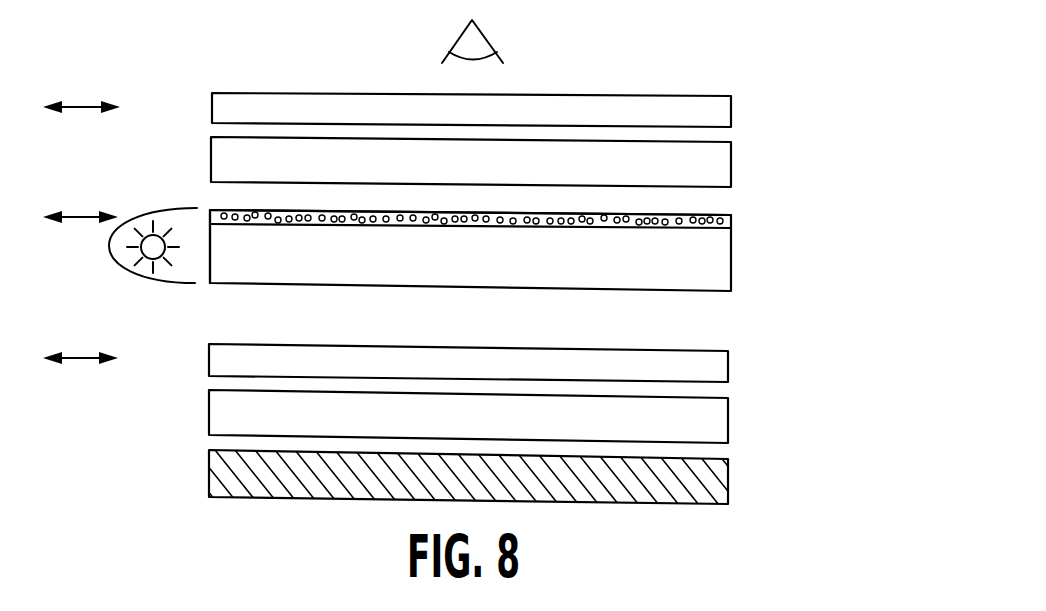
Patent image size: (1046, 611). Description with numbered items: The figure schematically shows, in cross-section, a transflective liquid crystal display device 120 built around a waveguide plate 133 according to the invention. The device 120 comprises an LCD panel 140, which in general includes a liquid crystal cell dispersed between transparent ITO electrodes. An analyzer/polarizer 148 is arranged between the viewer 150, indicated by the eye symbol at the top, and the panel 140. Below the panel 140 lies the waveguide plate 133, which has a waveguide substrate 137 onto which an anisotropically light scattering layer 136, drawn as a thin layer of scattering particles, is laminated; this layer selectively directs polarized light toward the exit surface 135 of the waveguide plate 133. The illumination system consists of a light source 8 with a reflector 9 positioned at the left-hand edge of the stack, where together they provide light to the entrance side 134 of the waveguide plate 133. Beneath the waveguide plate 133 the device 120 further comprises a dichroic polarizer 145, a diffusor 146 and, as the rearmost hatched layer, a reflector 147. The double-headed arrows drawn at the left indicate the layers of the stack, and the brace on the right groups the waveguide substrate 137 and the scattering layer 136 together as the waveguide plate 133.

The transflective LCD device 120 is at (158, 119).
The viewer 150 is at (490, 42).
The analyzer/polarizer 148 is at (715, 112).
The LCD panel 140 is at (715, 166).
The waveguide plate 133 is at (510, 254).
The exit surface 135 is at (237, 209).
The anisotropically light scattering layer 136 is at (479, 208).
The waveguide substrate 137 is at (715, 267).
The entrance side 134 is at (207, 268).
The reflector 9 is at (126, 270).
The light source 8 is at (153, 268).
The dichroic polarizer 145 is at (712, 363).
The diffusor 146 is at (712, 420).
The reflector 147 is at (712, 481).